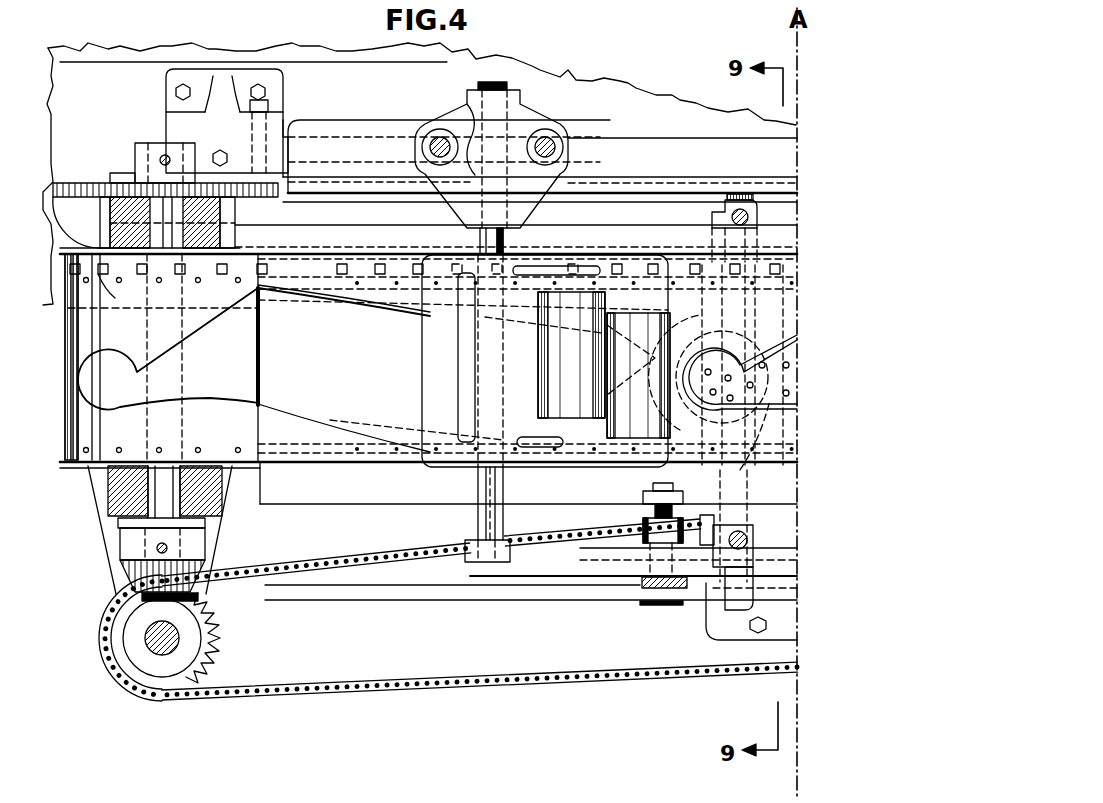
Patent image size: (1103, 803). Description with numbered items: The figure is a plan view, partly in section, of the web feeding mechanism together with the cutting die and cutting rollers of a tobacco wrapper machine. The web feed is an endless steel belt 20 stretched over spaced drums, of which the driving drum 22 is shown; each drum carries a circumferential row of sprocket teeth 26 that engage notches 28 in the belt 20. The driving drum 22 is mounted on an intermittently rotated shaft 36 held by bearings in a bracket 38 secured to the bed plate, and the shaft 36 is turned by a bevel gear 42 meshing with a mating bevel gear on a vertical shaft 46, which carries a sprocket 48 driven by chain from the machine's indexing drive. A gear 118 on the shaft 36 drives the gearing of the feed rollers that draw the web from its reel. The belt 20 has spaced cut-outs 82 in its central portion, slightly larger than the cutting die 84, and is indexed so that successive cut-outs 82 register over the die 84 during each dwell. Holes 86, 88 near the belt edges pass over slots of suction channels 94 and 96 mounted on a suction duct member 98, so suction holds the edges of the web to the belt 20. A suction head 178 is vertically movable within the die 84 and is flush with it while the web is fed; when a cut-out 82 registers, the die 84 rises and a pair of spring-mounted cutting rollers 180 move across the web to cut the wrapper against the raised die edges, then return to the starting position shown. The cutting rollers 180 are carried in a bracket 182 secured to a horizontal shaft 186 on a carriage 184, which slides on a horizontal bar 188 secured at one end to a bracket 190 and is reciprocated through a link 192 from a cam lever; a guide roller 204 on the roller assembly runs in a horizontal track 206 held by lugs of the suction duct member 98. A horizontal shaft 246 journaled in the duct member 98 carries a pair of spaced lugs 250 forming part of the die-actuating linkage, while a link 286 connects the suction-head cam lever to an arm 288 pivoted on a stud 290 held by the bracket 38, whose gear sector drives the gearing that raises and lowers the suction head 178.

The endless steel belt 20 is at (262, 300).
The driving drum 22 is at (240, 362).
The sprocket teeth 26 is at (45, 330).
The notches 28 is at (328, 300).
The intermittently rotated shaft 36 is at (150, 500).
The bracket 38 is at (108, 500).
The bevel gear 42 is at (190, 548).
The vertical shaft 46 is at (155, 655).
The sprocket 48 is at (218, 640).
The cut-outs 82 is at (368, 300).
The cutting die 84 is at (712, 356).
The holes 86 is at (238, 448).
The holes 88 is at (226, 292).
The suction channel 94 is at (334, 498).
The suction channel 96 is at (588, 242).
The suction duct member 98 is at (745, 640).
The gear 118 is at (80, 183).
The suction head 178 is at (762, 462).
The cutting rollers 180 is at (572, 408).
The bracket 182 is at (430, 390).
The carriage 184 is at (585, 126).
The horizontal shaft 186 is at (494, 84).
The horizontal bar 188 is at (622, 152).
The bracket 190 is at (245, 80).
The link 192 is at (325, 214).
The guide roller 204 is at (506, 542).
The horizontal track 206 is at (468, 576).
The horizontal shaft 246 is at (722, 205).
The spaced lugs 250 is at (712, 222).
The link 286 is at (648, 500).
The arm 288 is at (342, 586).
The stud 290 is at (120, 628).